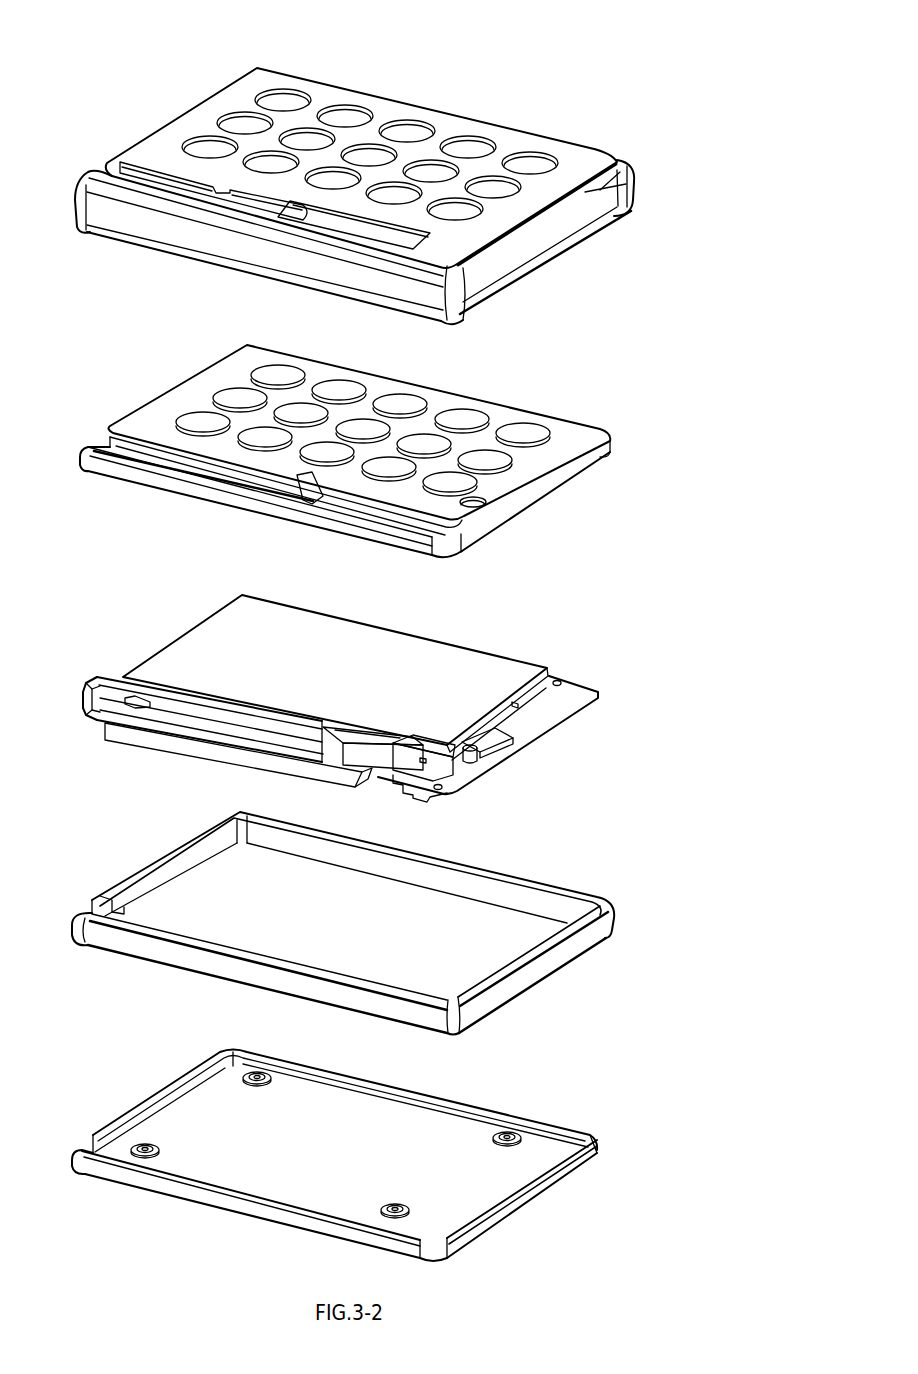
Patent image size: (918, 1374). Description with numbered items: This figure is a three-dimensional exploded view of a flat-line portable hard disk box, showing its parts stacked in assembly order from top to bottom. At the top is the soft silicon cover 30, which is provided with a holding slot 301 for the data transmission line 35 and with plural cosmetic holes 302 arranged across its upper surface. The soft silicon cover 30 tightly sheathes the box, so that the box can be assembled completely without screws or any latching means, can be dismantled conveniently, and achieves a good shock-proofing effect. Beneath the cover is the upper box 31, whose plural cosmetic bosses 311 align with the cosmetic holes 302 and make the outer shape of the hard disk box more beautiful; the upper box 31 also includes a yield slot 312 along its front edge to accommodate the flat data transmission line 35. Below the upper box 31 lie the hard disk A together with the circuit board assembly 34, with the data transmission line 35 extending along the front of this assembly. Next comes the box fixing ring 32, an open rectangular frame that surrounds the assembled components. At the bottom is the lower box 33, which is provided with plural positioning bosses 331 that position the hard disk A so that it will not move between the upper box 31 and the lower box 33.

The soft silicon cover 30 is at (512, 130).
The holding slot 301 is at (165, 177).
The cosmetic holes 302 is at (346, 118).
The upper box 31 is at (502, 413).
The cosmetic bosses 311 is at (403, 401).
The yield slot 312 is at (150, 452).
The hard disk A is at (482, 668).
The circuit board assembly 34 is at (572, 697).
The data transmission line 35 is at (207, 743).
The box fixing ring 32 is at (516, 862).
The lower box 33 is at (465, 1100).
The positioning bosses 331 is at (253, 1072).